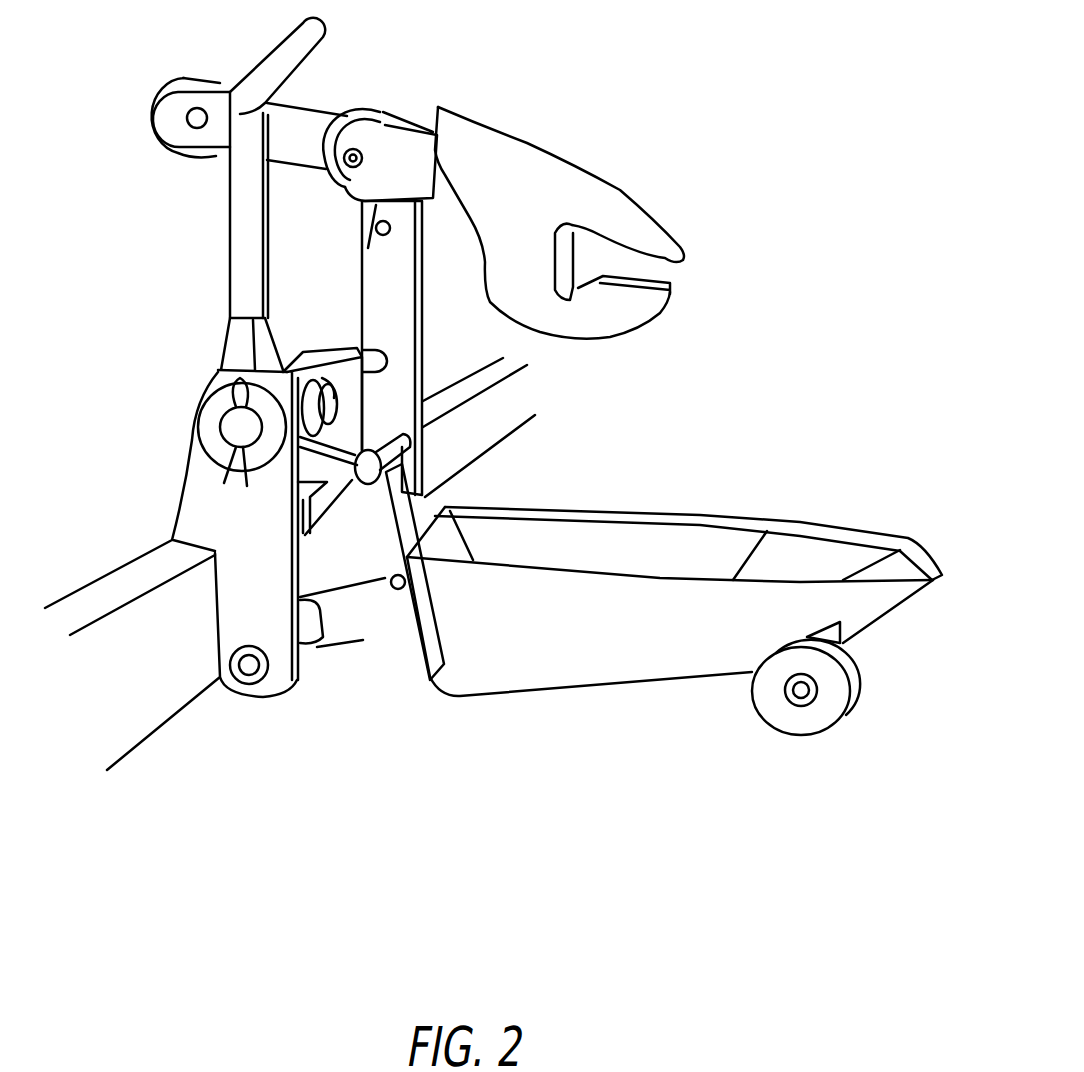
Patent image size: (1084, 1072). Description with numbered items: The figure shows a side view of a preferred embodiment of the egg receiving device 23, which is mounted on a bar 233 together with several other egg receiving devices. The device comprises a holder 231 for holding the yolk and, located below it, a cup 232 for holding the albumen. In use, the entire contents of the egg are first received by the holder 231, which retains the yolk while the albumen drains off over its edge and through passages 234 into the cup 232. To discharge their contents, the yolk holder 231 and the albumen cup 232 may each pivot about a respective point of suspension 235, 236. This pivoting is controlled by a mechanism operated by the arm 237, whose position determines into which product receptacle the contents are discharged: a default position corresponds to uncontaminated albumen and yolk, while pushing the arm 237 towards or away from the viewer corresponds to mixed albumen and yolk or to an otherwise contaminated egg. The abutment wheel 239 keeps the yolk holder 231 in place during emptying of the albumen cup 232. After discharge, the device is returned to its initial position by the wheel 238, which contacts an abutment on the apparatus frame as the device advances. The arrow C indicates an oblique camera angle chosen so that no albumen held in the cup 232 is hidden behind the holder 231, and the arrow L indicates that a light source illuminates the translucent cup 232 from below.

The egg receiving device 23 is at (437, 802).
The holder 231 is at (741, 506).
The cup 232 is at (604, 172).
The bar 233 is at (127, 722).
The passages 234 is at (567, 300).
The point of suspension 235 is at (371, 107).
The point of suspension 236 is at (396, 590).
The arm 237 is at (227, 232).
The wheel 238 is at (820, 717).
The abutment wheel 239 is at (158, 102).
The arrow C is at (800, 280).
The arrow L is at (606, 760).